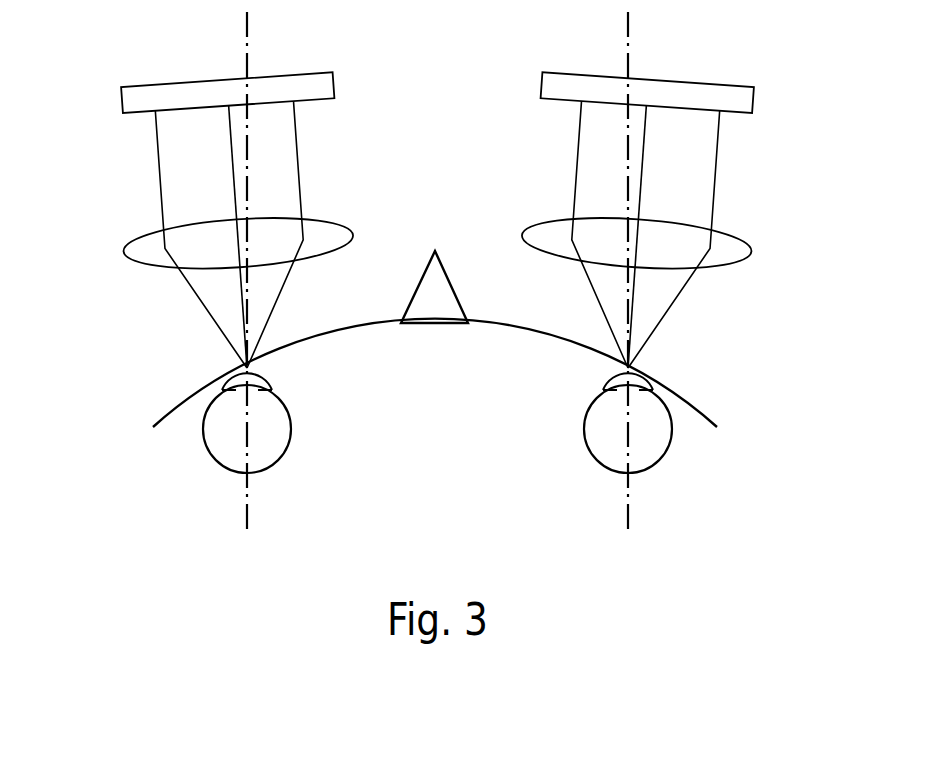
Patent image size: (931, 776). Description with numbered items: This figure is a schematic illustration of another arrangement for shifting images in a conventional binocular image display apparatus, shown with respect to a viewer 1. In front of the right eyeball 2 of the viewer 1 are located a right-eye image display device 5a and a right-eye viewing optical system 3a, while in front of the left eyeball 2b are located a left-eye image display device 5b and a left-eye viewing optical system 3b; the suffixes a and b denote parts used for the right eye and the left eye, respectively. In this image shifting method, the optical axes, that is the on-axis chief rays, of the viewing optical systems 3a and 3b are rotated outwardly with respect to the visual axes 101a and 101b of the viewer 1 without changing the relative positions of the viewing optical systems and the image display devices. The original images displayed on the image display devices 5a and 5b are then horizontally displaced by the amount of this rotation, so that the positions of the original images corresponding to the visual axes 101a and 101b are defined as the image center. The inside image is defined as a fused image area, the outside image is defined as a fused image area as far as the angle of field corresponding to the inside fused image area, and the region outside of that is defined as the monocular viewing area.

The viewer 1 is at (702, 413).
The eyeball 2 is at (657, 437).
The left eyeball 2b is at (223, 437).
The right-eye viewing optical system 3a is at (755, 252).
The left-eye viewing optical system 3b is at (125, 250).
The right-eye image display device 5a is at (757, 102).
The left-eye image display device 5b is at (122, 98).
The right visual axis 101a is at (628, 32).
The left visual axis 101b is at (248, 40).